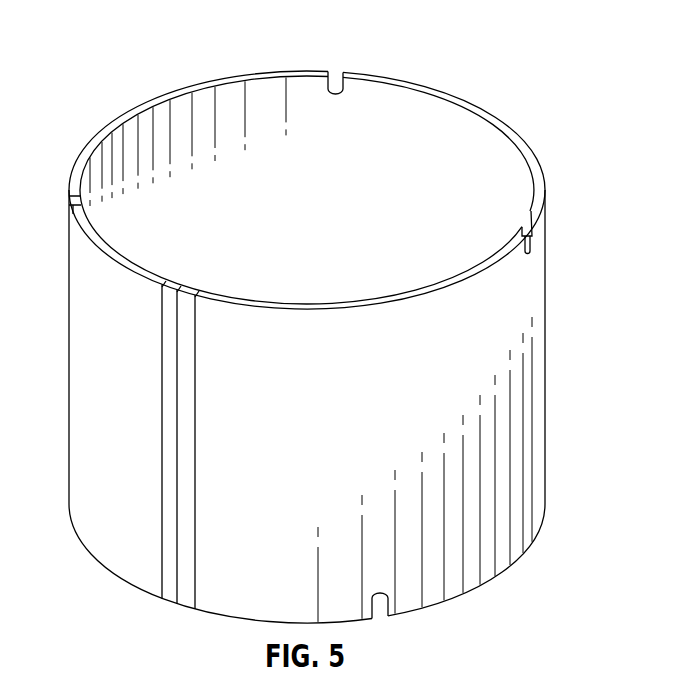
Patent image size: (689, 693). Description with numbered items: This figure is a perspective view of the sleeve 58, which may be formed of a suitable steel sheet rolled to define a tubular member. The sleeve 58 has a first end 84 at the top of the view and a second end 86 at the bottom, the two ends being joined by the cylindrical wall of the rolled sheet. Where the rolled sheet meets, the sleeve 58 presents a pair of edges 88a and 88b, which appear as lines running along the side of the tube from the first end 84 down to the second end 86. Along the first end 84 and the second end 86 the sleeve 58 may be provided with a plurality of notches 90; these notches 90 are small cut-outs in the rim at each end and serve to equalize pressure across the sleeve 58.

The sleeve 58 is at (127, 63).
The first end 84 is at (478, 108).
The second end 86 is at (466, 596).
The edge 88a is at (164, 282).
The edge 88b is at (192, 288).
The notch 90 is at (344, 74).